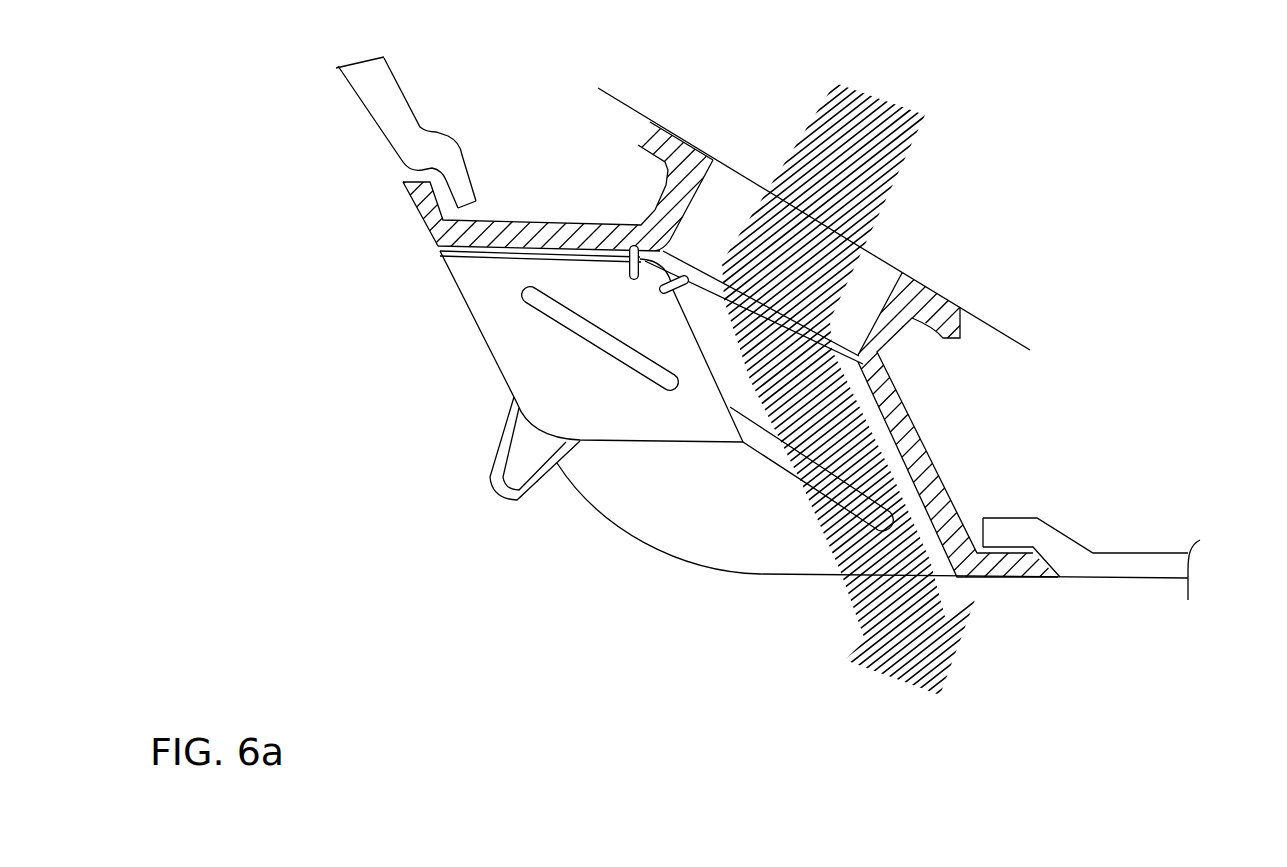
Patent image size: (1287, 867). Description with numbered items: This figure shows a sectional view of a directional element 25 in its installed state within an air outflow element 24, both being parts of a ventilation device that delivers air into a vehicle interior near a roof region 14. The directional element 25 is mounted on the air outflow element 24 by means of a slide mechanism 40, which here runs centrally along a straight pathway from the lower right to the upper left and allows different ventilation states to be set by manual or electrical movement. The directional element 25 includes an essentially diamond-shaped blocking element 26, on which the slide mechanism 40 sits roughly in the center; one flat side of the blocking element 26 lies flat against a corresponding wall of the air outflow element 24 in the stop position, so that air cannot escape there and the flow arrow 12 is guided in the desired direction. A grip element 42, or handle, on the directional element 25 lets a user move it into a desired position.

The flow arrow 12 is at (953, 666).
The roof region 14 is at (342, 111).
The air outflow element 24 is at (896, 365).
The directional element 25 is at (727, 469).
The blocking element 26 is at (510, 350).
The slide mechanism 40 is at (765, 479).
The grip element 42 is at (492, 511).